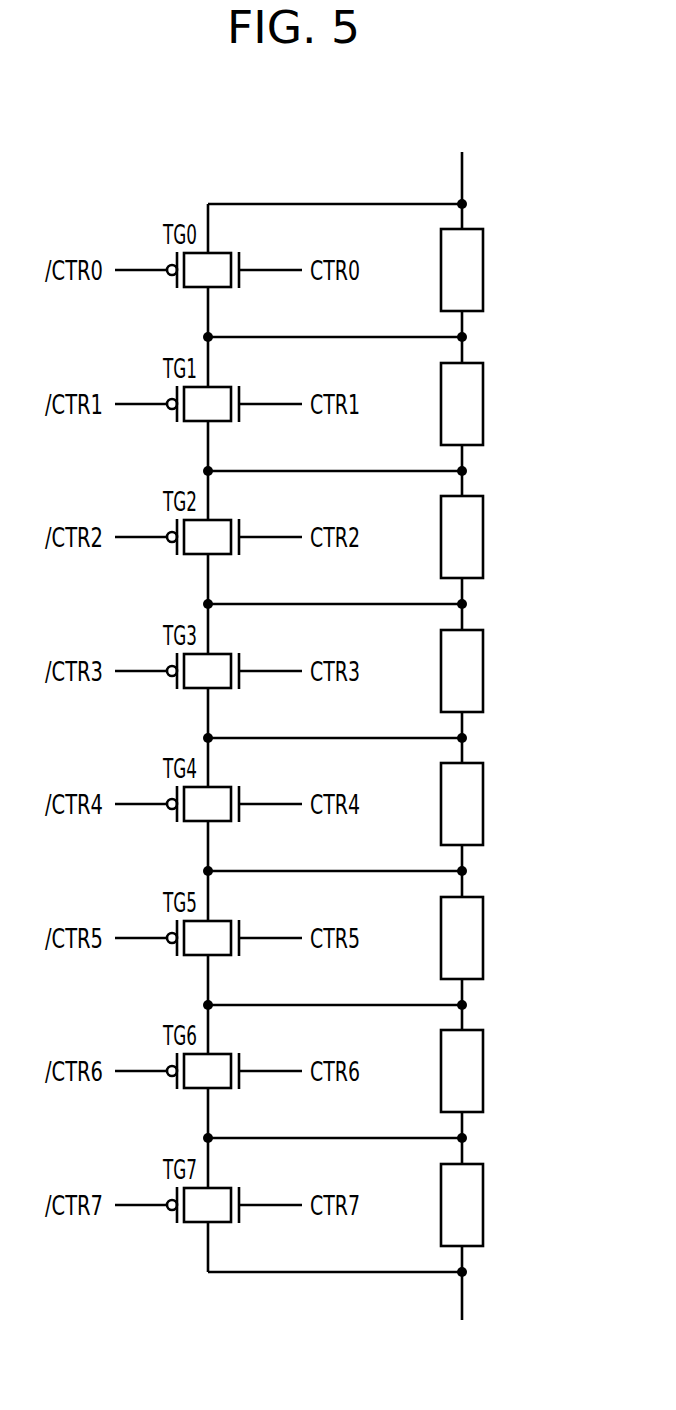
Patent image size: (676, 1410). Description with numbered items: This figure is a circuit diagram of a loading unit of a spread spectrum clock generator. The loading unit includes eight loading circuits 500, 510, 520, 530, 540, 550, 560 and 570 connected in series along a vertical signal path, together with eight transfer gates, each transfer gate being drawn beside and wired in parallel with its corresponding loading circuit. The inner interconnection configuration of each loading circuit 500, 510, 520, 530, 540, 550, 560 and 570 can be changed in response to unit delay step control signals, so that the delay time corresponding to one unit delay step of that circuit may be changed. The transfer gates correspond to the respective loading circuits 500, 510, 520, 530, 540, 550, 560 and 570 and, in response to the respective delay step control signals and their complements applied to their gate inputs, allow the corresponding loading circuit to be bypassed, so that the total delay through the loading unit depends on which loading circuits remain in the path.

The loading circuit 500 is at (483, 269).
The loading circuit 510 is at (483, 403).
The loading circuit 520 is at (483, 536).
The loading circuit 530 is at (483, 670).
The loading circuit 540 is at (483, 803).
The loading circuit 550 is at (483, 937).
The loading circuit 560 is at (483, 1070).
The loading circuit 570 is at (483, 1204).